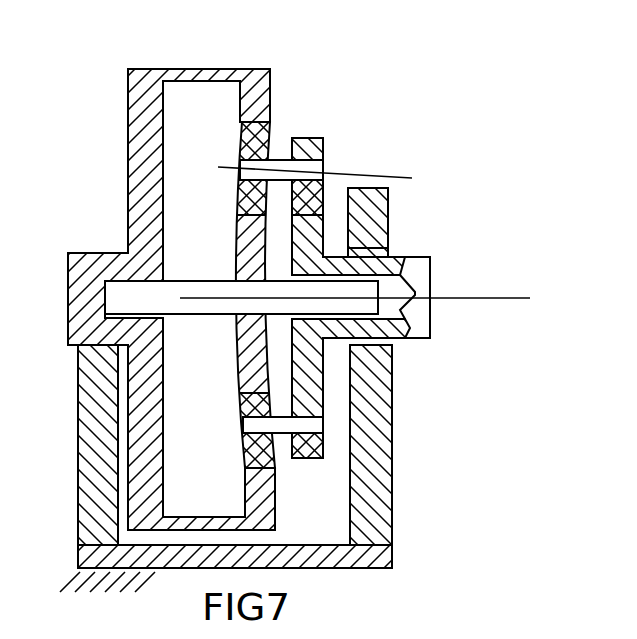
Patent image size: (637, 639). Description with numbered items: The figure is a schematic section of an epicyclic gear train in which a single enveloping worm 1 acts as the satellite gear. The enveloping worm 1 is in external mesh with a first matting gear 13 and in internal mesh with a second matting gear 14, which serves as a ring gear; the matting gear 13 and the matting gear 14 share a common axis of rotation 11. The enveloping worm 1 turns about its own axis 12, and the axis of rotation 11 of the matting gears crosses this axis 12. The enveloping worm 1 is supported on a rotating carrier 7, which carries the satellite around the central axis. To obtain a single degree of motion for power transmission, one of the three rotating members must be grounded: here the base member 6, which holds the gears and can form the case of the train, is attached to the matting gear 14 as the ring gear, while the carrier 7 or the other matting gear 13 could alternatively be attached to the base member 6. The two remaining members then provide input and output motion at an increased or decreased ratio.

The enveloping worm 1 is at (272, 132).
The base member 6 is at (102, 438).
The carrier 7 is at (302, 137).
The axis of rotation 11 is at (470, 298).
The axis of rotation 12 is at (367, 177).
The matting gear 13 is at (236, 247).
The matting gear 14 is at (138, 107).